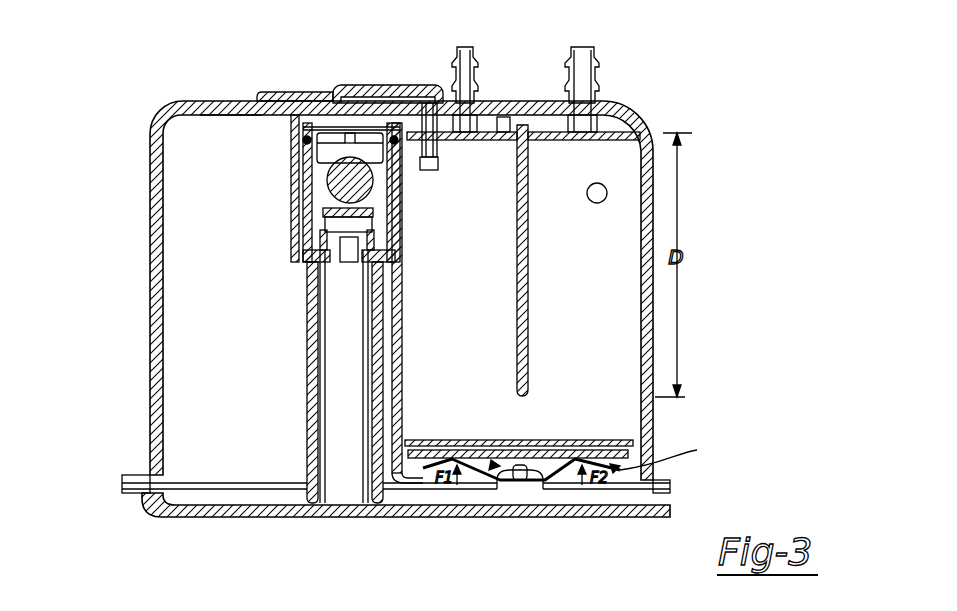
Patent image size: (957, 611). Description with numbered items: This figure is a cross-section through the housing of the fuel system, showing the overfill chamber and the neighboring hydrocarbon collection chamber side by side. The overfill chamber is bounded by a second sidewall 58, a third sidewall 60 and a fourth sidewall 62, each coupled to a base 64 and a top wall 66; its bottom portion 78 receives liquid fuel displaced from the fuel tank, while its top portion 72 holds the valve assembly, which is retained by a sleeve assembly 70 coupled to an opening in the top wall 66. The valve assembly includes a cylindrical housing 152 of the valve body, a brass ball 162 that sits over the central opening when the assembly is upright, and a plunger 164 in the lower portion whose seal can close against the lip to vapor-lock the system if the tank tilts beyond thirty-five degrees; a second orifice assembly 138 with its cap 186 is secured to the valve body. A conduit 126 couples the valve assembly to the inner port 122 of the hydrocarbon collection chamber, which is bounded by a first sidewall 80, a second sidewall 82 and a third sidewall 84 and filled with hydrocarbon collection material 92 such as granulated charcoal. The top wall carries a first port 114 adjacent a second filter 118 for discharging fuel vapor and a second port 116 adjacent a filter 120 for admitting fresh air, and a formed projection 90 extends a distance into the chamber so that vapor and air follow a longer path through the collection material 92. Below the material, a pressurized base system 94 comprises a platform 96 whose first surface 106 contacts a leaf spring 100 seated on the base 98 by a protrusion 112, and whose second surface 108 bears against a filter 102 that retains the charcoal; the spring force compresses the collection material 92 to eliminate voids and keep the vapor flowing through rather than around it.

The second sidewall 58 is at (155, 413).
The third sidewall 60 is at (236, 381).
The fourth sidewall 62 is at (392, 507).
The base 64 is at (172, 498).
The top wall 66 is at (235, 117).
The sleeve assembly 70 is at (190, 137).
The top portion 72 is at (218, 268).
The bottom portion 78 is at (177, 447).
The first sidewall 80 is at (420, 480).
The second sidewall 82 is at (452, 306).
The third sidewall 84 is at (641, 326).
The formed projection 90 is at (528, 200).
The hydrocarbon collection material 92 is at (608, 193).
The pressurized base system 94 is at (576, 428).
The platform 96 is at (492, 468).
The base 98 is at (600, 490).
The leaf spring 100 is at (608, 480).
The filter 102 is at (637, 443).
The first surface 106 is at (630, 455).
The second surface 108 is at (660, 483).
The protrusion 112 is at (522, 492).
The first port 114 is at (598, 53).
The second port 116 is at (478, 55).
The second filter 118 is at (615, 133).
The filter 120 is at (503, 118).
The inner port 122 is at (425, 135).
The conduit 126 is at (360, 85).
The second orifice assembly 138 is at (370, 125).
The cylindrical housing 152 is at (303, 263).
The ball 162 is at (333, 160).
The plunger 164 is at (318, 222).
The cap 186 is at (337, 272).